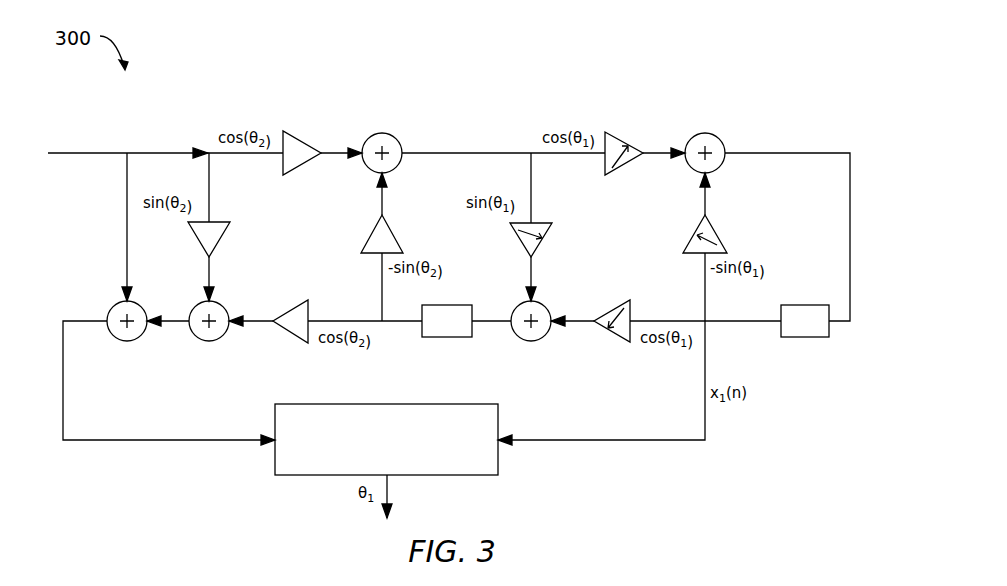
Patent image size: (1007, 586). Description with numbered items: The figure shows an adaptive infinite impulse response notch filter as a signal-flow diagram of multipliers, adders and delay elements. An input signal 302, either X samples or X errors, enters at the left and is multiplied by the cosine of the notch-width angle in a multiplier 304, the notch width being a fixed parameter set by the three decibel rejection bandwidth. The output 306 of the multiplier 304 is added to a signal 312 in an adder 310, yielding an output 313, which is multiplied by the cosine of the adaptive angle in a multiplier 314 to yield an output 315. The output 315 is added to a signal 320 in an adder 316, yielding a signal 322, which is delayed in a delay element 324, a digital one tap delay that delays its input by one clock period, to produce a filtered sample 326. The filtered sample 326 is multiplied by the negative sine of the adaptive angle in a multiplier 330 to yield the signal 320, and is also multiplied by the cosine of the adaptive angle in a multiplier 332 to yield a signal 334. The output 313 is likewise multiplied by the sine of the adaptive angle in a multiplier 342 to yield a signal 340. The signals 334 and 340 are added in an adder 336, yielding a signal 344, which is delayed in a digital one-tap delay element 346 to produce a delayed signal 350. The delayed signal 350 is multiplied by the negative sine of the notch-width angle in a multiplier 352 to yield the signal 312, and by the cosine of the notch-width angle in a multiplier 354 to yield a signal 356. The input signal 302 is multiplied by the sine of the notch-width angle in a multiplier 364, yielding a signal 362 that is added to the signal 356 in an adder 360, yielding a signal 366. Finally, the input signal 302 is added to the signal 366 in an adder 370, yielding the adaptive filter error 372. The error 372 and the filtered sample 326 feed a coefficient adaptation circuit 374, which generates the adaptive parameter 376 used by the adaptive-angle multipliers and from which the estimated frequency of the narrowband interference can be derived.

The input signal 302 is at (68, 153).
The multiplier 304 is at (303, 132).
The output of multiplier 306 is at (326, 153).
The adder 310 is at (382, 133).
The signal 312 is at (384, 207).
The output 313 is at (421, 153).
The multiplier 314 is at (623, 135).
The output 315 is at (649, 153).
The adder 316 is at (705, 133).
The signal 320 is at (708, 207).
The signal 322 is at (740, 153).
The delay element 324 is at (805, 338).
The filtered sample x1(n) 326 is at (762, 323).
The multiplier 330 is at (721, 233).
The multiplier 332 is at (612, 341).
The signal 334 is at (587, 323).
The adder 336 is at (529, 343).
The signal 340 is at (533, 266).
The multiplier 342 is at (547, 240).
The signal 344 is at (503, 323).
The digital one-tap delay element 346 is at (445, 339).
The delayed signal 350 is at (405, 323).
The multiplier 352 is at (399, 233).
The multiplier 354 is at (288, 340).
The signal 356 is at (262, 326).
The adder 360 is at (207, 343).
The signal 362 is at (212, 266).
The multiplier 364 is at (227, 242).
The signal 366 is at (182, 326).
The adder 370 is at (125, 343).
The adaptive filter error e(n) 372 is at (101, 326).
The coefficient adaptation circuit 374 is at (490, 364).
The adaptive parameter θ1 376 is at (390, 480).